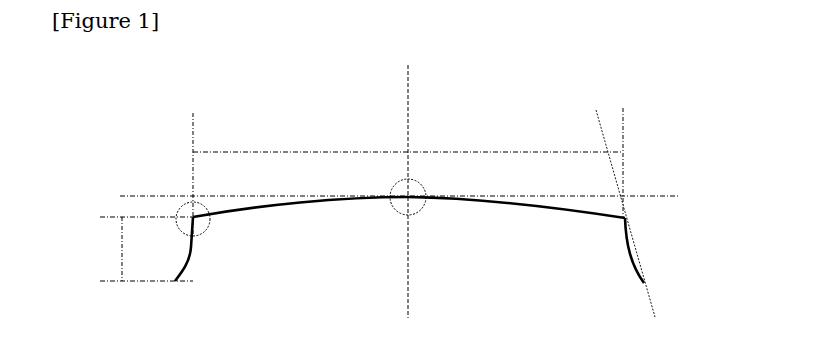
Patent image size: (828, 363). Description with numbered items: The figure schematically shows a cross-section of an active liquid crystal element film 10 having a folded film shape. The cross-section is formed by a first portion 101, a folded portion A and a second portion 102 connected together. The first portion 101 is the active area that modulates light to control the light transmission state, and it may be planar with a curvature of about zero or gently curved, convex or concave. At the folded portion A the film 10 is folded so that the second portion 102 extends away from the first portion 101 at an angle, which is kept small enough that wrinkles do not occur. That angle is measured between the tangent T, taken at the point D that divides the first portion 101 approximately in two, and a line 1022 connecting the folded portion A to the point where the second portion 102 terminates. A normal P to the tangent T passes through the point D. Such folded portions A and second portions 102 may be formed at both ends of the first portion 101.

The active liquid crystal element film 10 is at (565, 219).
The first portion 101 is at (408, 172).
The second portion 102 is at (136, 249).
The line for measuring the angle of the second portion 1022 is at (610, 202).
The folded portion A is at (202, 233).
The bisector of the first portion D is at (393, 213).
The tangent of the first portion T is at (400, 183).
The normal to the tangent of the bisector of the first portion P is at (418, 191).